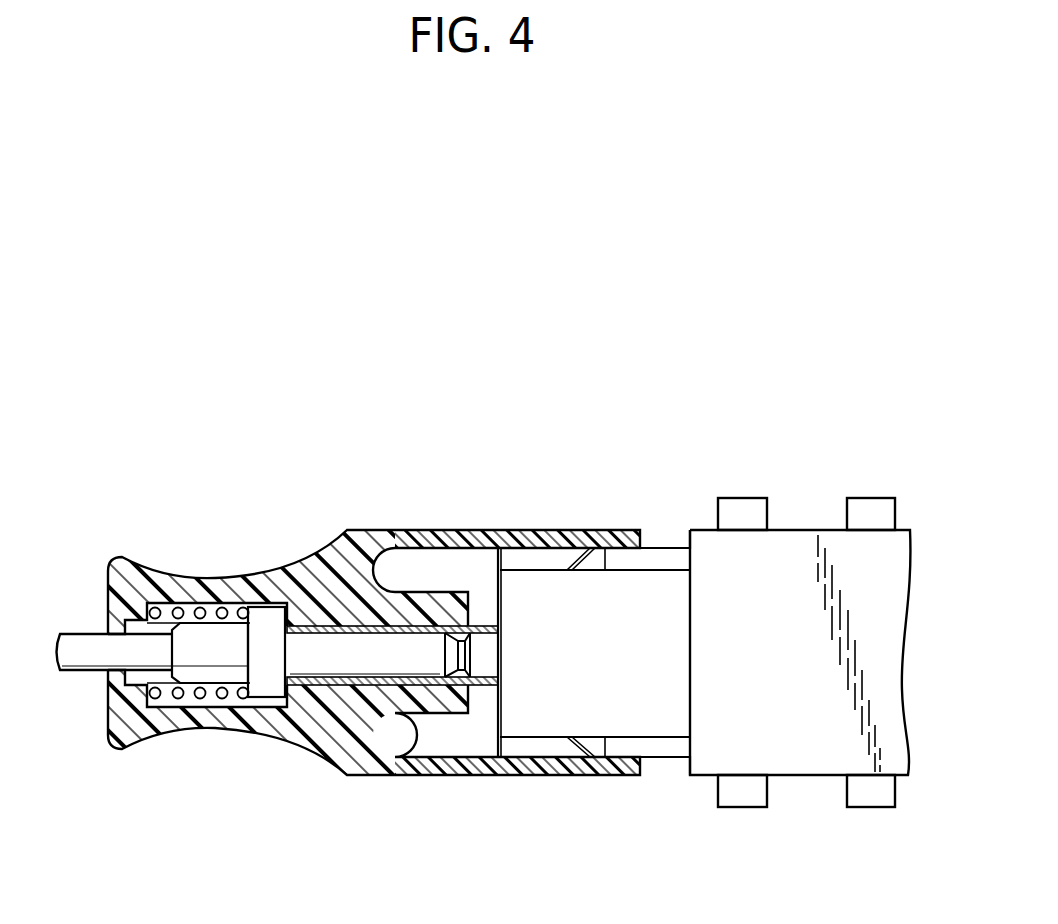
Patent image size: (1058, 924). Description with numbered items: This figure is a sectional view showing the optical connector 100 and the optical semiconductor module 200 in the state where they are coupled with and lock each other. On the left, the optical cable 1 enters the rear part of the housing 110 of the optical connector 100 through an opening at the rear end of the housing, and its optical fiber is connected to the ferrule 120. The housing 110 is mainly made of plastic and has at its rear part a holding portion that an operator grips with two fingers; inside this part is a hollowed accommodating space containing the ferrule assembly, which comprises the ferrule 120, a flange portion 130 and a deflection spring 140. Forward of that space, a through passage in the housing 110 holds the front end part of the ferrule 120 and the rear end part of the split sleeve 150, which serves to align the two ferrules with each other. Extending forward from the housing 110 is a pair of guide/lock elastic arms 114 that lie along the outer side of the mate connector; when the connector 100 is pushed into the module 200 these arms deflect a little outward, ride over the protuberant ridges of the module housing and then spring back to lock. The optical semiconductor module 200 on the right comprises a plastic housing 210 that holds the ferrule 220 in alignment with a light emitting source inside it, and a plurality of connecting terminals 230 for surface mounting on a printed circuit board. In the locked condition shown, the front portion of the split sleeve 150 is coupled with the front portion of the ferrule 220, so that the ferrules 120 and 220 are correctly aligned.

The optical cable 1 is at (75, 643).
The optical connector 100 is at (363, 598).
The housing 110 is at (266, 535).
The guide/lock elastic arm 114 is at (565, 540).
The ferrule 120 is at (378, 663).
The flange portion 130 is at (218, 667).
The deflection spring 140 is at (198, 612).
The split sleeve 150 is at (428, 620).
The optical semiconductor module 200 is at (648, 651).
The housing 210 is at (795, 547).
The ferrule 220 is at (484, 648).
The connecting terminals 230 is at (748, 790).